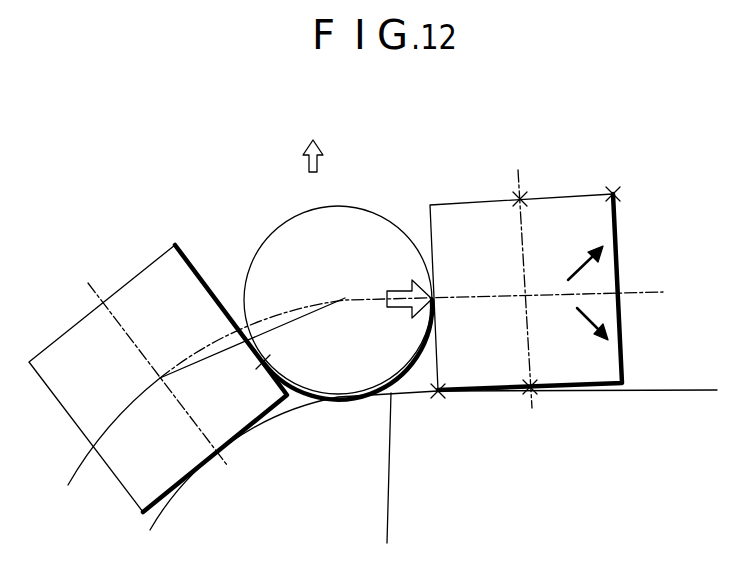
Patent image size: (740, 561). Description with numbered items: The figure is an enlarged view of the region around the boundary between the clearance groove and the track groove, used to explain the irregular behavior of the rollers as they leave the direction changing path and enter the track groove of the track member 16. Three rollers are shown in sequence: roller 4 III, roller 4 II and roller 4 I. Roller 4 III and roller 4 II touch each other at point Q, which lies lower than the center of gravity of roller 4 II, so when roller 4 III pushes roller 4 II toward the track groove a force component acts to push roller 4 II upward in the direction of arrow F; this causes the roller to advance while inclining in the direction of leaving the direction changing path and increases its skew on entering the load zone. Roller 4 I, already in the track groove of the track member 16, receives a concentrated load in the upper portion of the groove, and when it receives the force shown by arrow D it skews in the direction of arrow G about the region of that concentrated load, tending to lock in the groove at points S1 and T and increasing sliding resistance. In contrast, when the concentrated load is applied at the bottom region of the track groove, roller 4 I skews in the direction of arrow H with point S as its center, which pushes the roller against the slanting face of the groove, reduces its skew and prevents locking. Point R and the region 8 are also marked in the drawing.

The roller 4I is at (463, 210).
The roller 4II is at (367, 225).
The roller 4III is at (150, 286).
The bent sheet portion 8 is at (290, 534).
The track member 16 is at (519, 503).
The arrow force D is at (396, 308).
The arrow F is at (319, 156).
The arrow G is at (588, 273).
The arrow H is at (590, 317).
The point Q is at (266, 362).
The reference point R is at (524, 196).
The point S is at (532, 395).
The point S1 is at (618, 192).
The point T is at (439, 398).